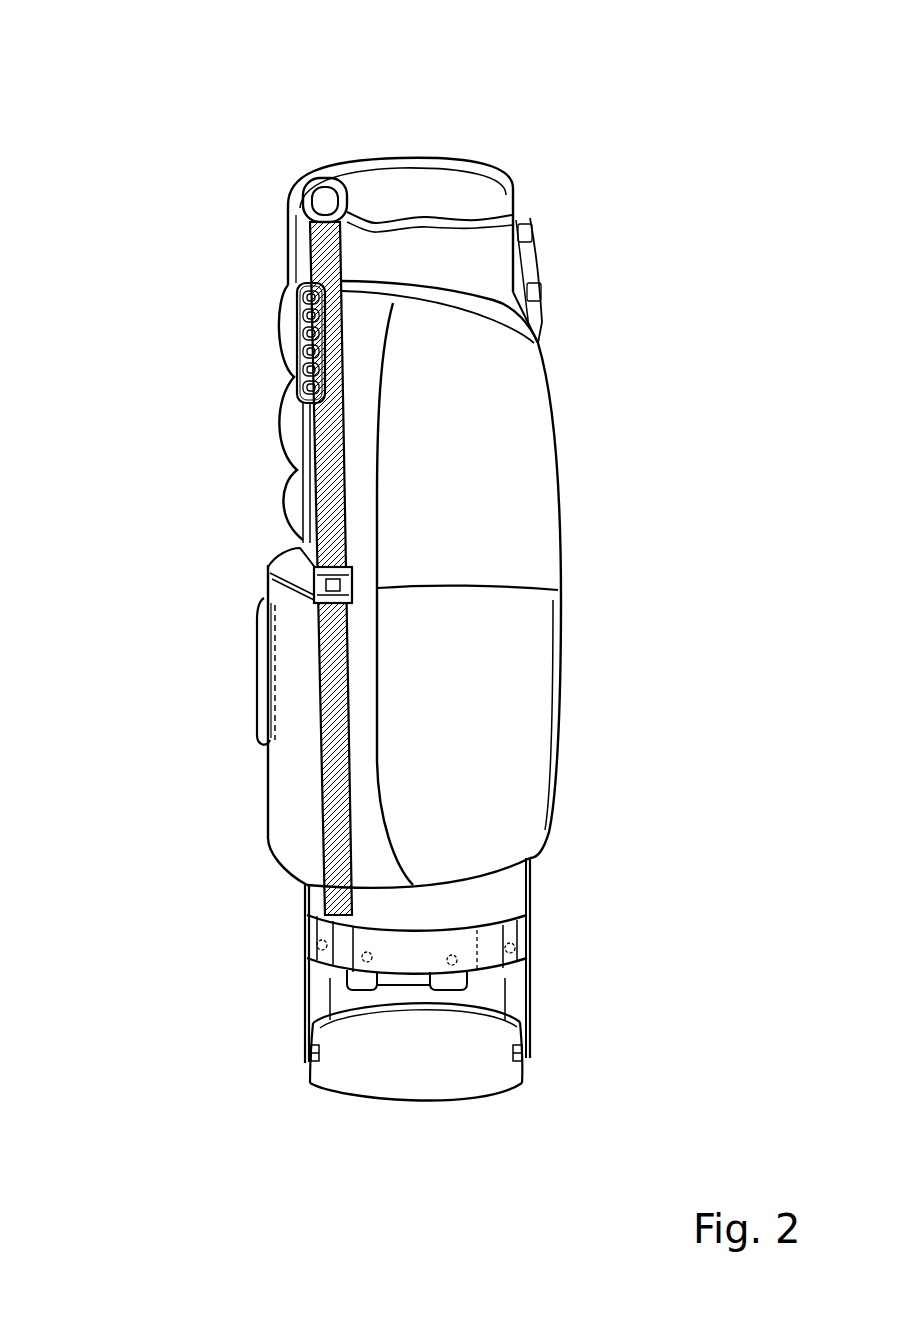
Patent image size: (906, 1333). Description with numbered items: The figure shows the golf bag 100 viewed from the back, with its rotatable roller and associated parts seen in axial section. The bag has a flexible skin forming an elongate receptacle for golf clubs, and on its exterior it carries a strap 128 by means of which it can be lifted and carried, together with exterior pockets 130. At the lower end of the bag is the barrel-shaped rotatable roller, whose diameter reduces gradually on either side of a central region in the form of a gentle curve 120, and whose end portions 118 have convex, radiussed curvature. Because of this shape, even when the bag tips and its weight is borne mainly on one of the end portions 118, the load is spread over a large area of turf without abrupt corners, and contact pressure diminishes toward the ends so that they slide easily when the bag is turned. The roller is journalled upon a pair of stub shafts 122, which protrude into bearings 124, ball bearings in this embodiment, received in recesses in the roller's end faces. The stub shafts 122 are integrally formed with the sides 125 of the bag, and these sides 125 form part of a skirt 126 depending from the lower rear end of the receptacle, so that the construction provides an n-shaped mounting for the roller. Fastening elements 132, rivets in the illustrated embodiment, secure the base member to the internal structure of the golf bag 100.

The golf bag 100 is at (178, 135).
The end portions 118 is at (322, 1098).
The gentle curve 120 is at (417, 1108).
The stub shafts 122 is at (528, 1040).
The bearings 124 is at (525, 1066).
The sides 125 is at (302, 1028).
The skirt 126 is at (530, 981).
The strap 128 is at (290, 369).
The exterior pockets 130 is at (257, 653).
The fastening elements 132 is at (307, 943).